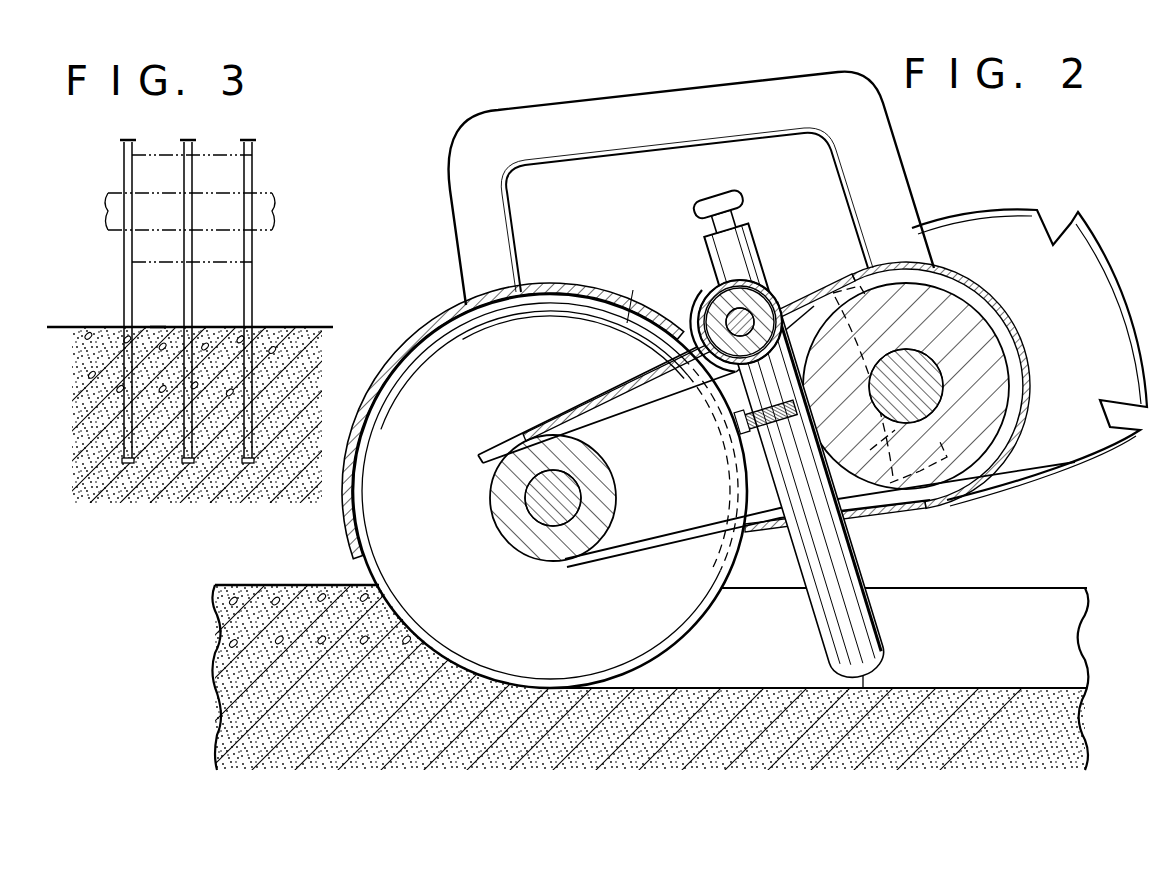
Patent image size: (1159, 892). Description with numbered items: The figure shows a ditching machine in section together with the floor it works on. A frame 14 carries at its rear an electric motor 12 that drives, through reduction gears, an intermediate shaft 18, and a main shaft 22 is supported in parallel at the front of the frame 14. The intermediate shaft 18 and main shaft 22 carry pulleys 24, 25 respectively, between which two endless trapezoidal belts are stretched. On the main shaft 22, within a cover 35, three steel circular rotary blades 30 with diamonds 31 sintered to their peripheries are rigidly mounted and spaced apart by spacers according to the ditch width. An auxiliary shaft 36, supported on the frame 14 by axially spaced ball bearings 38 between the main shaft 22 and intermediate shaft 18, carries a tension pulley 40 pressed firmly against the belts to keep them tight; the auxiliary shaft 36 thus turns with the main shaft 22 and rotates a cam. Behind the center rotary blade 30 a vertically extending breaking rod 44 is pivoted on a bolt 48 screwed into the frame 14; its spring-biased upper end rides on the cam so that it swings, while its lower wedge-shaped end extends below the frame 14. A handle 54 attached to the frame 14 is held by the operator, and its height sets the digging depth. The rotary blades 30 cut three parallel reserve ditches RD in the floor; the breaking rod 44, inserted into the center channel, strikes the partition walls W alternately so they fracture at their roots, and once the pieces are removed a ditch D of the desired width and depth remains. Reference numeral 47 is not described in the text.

In FIG. 2, the electric motor 12 is at (1105, 262).
In FIG. 2, the frame 14 is at (917, 508).
In FIG. 2, the intermediate shaft 18 is at (941, 387).
In FIG. 3, the main shaft 22 is at (272, 197).
In FIG. 2, the main shaft 22 is at (520, 552).
In FIG. 2, the pulley 24 is at (1013, 434).
In FIG. 2, the pulley 25 is at (501, 520).
In FIG. 3, the rotary blades 30 is at (124, 279).
In FIG. 2, the rotary blades 30 is at (457, 326).
In FIG. 3, the diamonds 31 is at (128, 466).
In FIG. 2, the diamonds 31 is at (642, 296).
In FIG. 2, the cover 35 is at (412, 344).
In FIG. 2, the auxiliary shaft 36 is at (708, 310).
In FIG. 2, the ball bearings 38 is at (776, 310).
In FIG. 2, the tension pulley 40 is at (759, 291).
In FIG. 2, the breaking rod 44 is at (851, 563).
In FIG. 2, the collar tab 47 is at (748, 426).
In FIG. 2, the bolt 48 is at (754, 428).
In FIG. 2, the handle 54 is at (598, 104).
In FIG. 2, the reserve ditches RD is at (766, 590).
In FIG. 2, the ditch D is at (997, 590).
In FIG. 3, the partition walls W is at (156, 318).